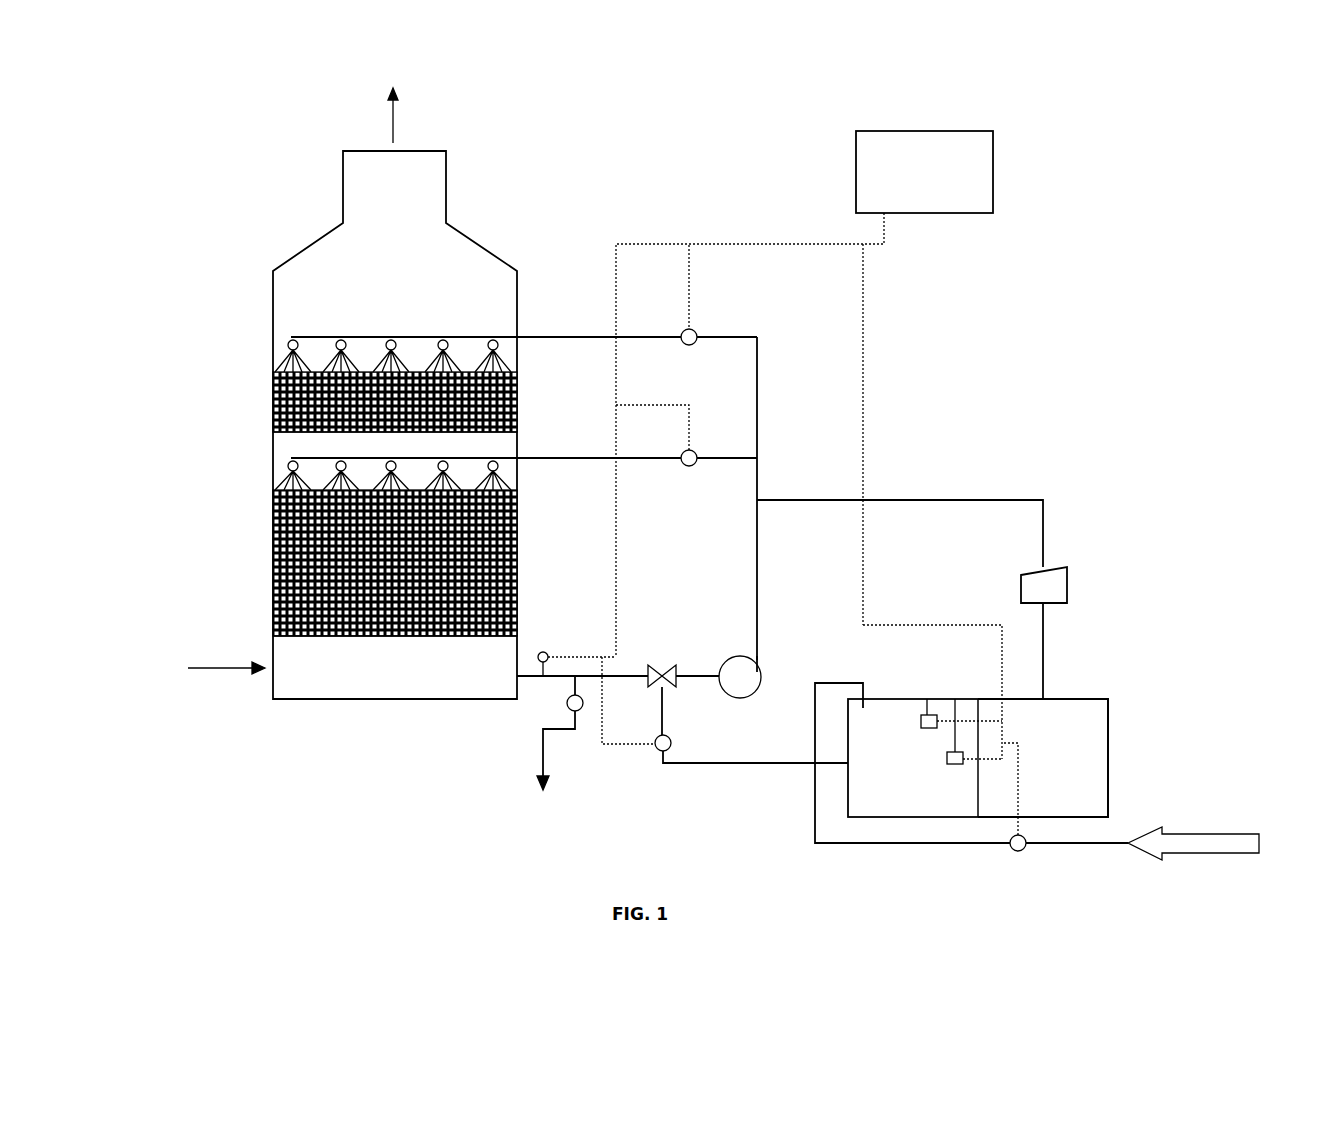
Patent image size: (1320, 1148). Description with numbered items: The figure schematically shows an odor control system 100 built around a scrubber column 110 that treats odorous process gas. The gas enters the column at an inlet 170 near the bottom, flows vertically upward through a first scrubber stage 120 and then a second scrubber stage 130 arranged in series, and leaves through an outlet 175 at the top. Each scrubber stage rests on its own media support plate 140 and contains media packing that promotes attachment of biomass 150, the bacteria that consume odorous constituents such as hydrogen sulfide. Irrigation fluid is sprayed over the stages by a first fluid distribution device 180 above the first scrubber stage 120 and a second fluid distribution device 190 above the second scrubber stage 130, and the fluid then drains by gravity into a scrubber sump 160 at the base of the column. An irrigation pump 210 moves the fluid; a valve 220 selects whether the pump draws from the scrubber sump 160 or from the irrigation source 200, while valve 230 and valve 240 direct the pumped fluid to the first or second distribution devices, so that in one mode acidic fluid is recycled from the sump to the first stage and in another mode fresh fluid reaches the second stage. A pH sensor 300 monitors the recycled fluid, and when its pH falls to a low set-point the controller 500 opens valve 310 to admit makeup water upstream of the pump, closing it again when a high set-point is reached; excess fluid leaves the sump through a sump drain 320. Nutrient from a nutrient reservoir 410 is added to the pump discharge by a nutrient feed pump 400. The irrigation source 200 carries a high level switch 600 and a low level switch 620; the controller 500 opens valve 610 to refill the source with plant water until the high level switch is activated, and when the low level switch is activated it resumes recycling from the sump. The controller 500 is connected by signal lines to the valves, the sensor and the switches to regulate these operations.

The odor control system 100 is at (1037, 283).
The scrubber column 110 is at (313, 247).
The first scrubber stage 120 is at (273, 548).
The second scrubber stage 130 is at (272, 395).
The media support plate 140 is at (272, 433).
The biomass 150 is at (273, 598).
The scrubber sump 160 is at (427, 700).
The inlet 170 is at (206, 667).
The outlet 175 is at (417, 115).
The first fluid distribution device 180 is at (509, 451).
The second fluid distribution device 190 is at (415, 337).
The irrigation source 200 is at (900, 698).
The irrigation pump 210 is at (760, 670).
The valve 220 is at (670, 668).
The valve 230 is at (695, 451).
The valve 240 is at (695, 330).
The pH sensor 300 is at (547, 652).
The valve 310 is at (658, 749).
The sump drain 320 is at (555, 751).
The nutrient feed pump 400 is at (1068, 572).
The nutrient reservoir 410 is at (1110, 716).
The controller 500 is at (856, 172).
The high level switch 600 is at (907, 729).
The valve 610 is at (1015, 853).
The low level switch 620 is at (953, 766).